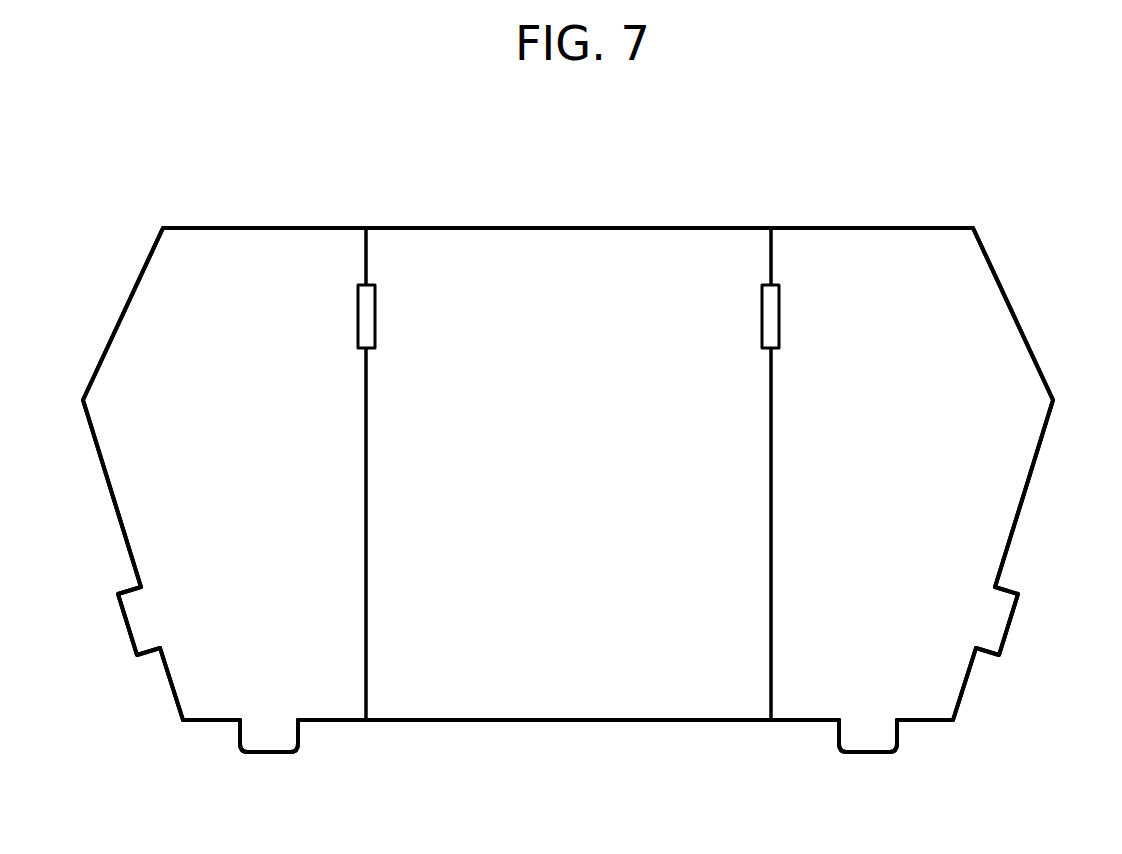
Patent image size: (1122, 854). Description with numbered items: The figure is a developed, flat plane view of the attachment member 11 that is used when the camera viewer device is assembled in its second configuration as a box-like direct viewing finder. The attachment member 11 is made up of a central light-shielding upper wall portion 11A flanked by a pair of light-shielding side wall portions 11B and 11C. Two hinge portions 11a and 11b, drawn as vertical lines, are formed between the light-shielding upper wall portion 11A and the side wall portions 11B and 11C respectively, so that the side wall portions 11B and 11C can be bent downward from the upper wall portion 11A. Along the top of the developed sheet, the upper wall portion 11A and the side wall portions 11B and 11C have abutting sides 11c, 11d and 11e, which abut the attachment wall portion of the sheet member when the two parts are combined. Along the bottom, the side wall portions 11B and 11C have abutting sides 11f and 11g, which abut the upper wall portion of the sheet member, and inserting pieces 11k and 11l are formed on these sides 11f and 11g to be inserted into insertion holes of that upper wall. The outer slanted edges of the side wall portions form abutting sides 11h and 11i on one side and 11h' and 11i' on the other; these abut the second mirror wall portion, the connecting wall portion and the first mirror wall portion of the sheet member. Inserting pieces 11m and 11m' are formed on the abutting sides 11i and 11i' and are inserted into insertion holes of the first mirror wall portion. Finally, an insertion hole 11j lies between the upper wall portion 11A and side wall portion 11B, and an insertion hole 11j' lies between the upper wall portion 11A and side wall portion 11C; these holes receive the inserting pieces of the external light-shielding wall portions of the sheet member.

The attachment member 11 is at (747, 177).
The light-shielding upper wall portion 11A is at (571, 705).
The light-shielding side wall portion 11B is at (128, 509).
The light-shielding side wall portion 11C is at (1002, 536).
The hinge portion 11a is at (364, 524).
The hinge portion 11b is at (769, 524).
The abutting side 11c is at (570, 226).
The abutting side 11d is at (215, 226).
The abutting side 11e is at (905, 226).
The abutting side 11f is at (205, 723).
The abutting side 11g is at (928, 723).
The abutting side 11h is at (109, 314).
The abutting side 11h' is at (1030, 314).
The abutting side 11i is at (140, 688).
The abutting side 11i' is at (1071, 451).
The insertion hole 11j is at (332, 316).
The insertion hole 11j' is at (734, 316).
The inserting piece 11k is at (268, 753).
The inserting piece 11l is at (868, 753).
The inserting piece 11m is at (102, 627).
The inserting piece 11m' is at (1039, 626).